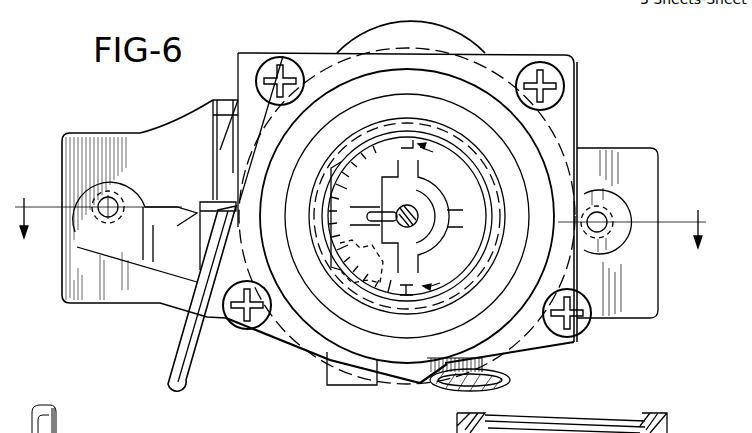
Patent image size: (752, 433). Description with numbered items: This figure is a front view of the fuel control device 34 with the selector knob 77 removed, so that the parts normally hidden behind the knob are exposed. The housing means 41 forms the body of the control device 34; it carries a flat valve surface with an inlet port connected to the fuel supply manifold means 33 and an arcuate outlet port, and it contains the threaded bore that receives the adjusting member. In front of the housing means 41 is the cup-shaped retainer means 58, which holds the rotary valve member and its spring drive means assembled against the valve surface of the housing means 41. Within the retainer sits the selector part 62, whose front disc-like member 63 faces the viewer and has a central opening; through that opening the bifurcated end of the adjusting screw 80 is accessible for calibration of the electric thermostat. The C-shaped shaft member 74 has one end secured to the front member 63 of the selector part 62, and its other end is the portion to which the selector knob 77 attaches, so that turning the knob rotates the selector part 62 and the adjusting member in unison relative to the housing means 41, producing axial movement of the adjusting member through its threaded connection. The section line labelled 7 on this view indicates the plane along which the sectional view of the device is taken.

The fuel control device 34 is at (648, 91).
The housing means 41 is at (157, 135).
The front disc-like member 63 is at (462, 165).
The adjusting screw 80 is at (414, 212).
The shaft member 74 is at (433, 246).
The cup-shaped retainer means 58 is at (298, 318).
The fuel supply manifold means 33 is at (337, 377).
The selector knob 77 is at (312, 357).
The selector part 62 is at (372, 300).
The section line 7- 7 is at (361, 238).